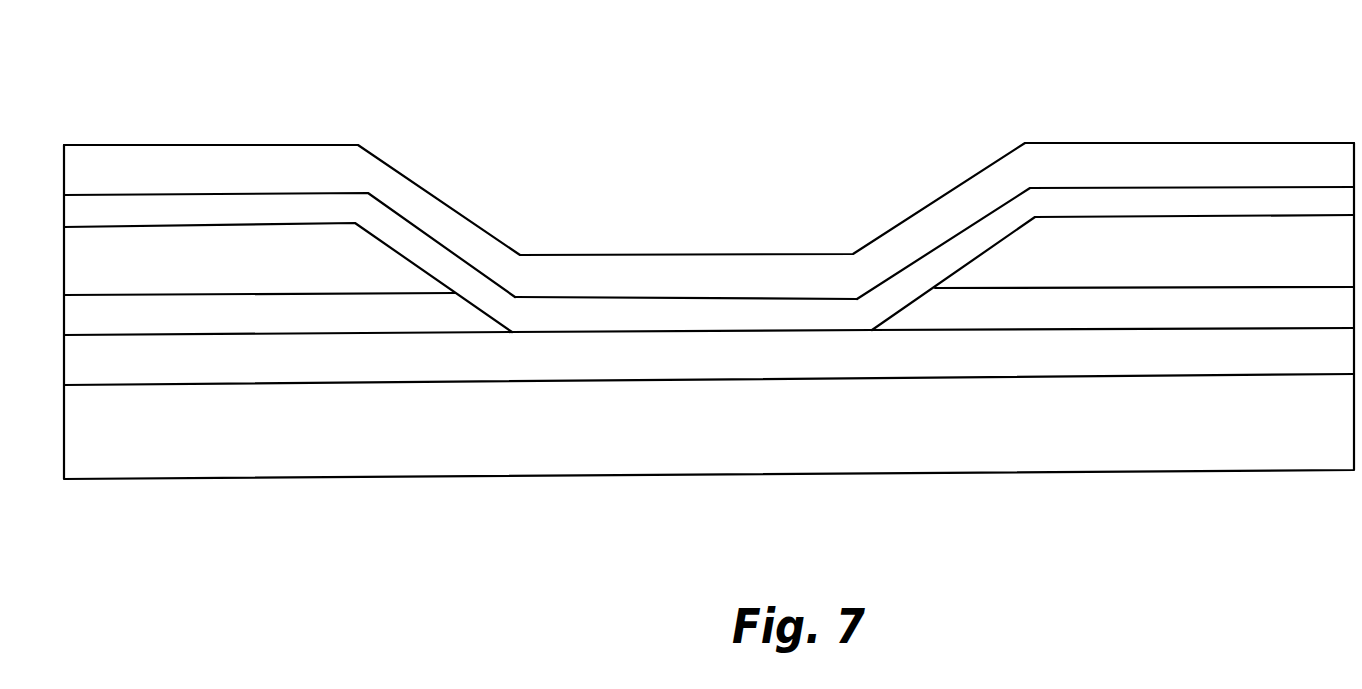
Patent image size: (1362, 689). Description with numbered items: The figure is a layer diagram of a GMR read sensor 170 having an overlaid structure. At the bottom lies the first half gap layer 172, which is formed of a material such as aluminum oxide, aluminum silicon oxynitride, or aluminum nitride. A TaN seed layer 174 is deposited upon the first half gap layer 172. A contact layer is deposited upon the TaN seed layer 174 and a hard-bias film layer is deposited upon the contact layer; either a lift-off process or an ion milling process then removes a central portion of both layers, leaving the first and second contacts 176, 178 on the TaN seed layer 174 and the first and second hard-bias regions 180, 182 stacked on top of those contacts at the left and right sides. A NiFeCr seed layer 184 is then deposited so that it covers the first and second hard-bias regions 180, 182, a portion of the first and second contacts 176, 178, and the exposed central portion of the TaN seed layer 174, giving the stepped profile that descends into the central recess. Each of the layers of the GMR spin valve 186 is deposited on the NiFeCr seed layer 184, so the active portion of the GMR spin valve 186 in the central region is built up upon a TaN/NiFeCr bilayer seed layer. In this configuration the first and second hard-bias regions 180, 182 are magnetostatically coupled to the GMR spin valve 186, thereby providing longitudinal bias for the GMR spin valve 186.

The GMR read sensor 170 is at (1152, 88).
The first half gap layer 172 is at (749, 432).
The TaN seed layer 174 is at (736, 367).
The first contact 176 is at (387, 323).
The second contact 178 is at (1057, 322).
The first hard-bias region 180 is at (349, 270).
The second hard-bias region 182 is at (1078, 265).
The NiFeCr seed layer 184 is at (778, 329).
The GMR spin valve 186 is at (776, 291).